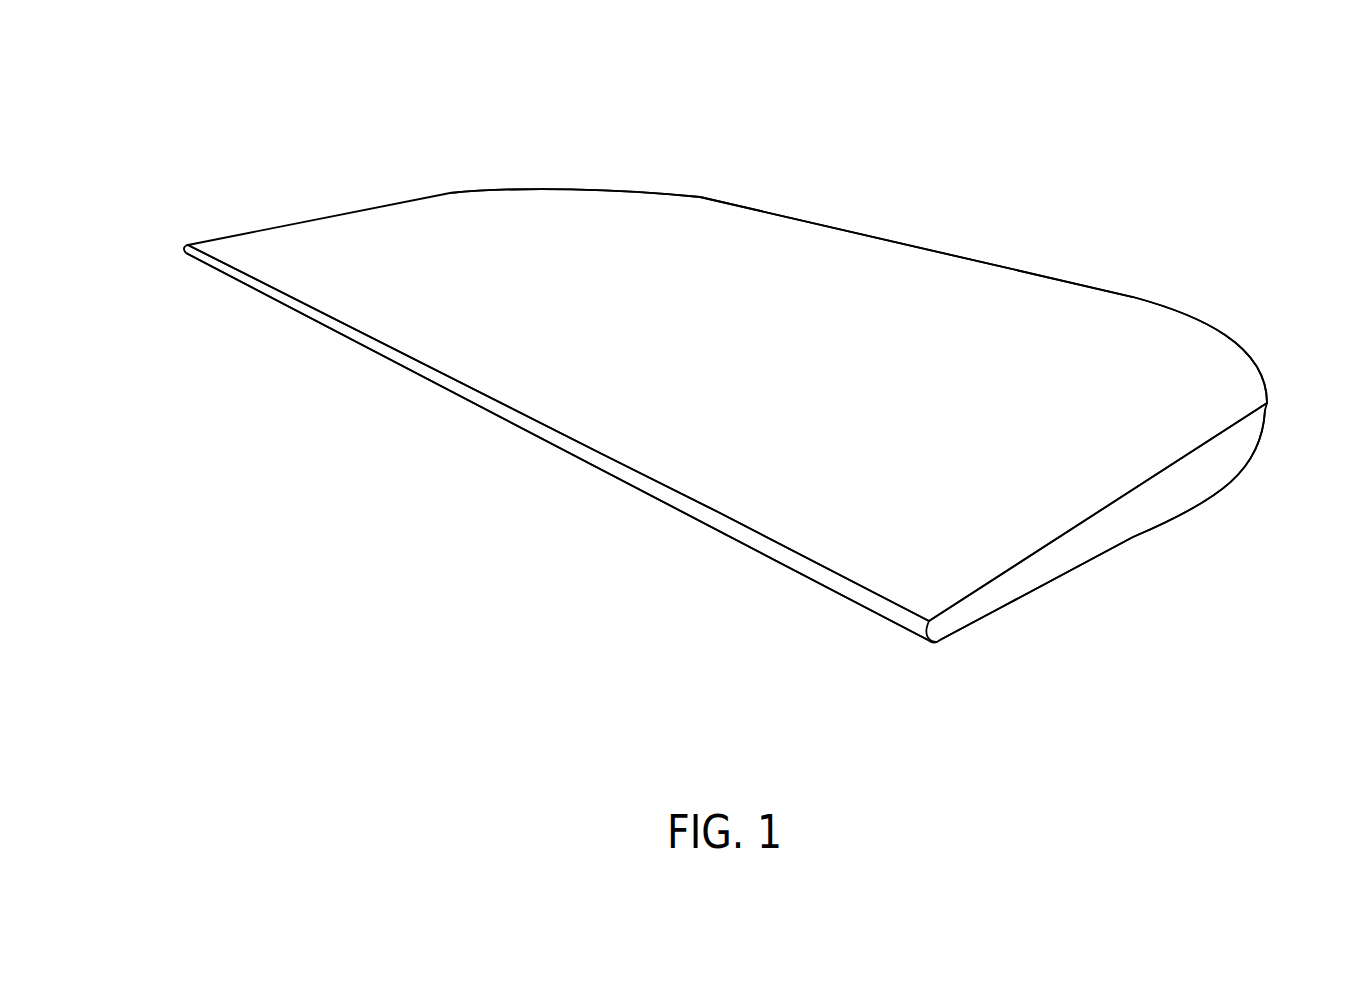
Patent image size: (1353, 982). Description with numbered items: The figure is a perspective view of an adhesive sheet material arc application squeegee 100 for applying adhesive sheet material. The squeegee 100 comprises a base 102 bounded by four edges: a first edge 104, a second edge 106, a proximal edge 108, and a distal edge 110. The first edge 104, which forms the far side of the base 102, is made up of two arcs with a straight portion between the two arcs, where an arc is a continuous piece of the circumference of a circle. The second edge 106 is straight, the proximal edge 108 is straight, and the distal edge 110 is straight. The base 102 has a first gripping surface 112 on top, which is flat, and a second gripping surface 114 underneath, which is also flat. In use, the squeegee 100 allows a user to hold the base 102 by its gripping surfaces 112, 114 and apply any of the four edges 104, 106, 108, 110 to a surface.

The adhesive sheet material arc application squeegee 100 is at (708, 384).
The base 102 is at (883, 565).
The first edge 104 is at (882, 237).
The second edge 106 is at (575, 450).
The proximal edge 108 is at (1118, 528).
The distal edge 110 is at (233, 233).
The first gripping surface 112 is at (643, 213).
The second gripping surface 114 is at (985, 615).